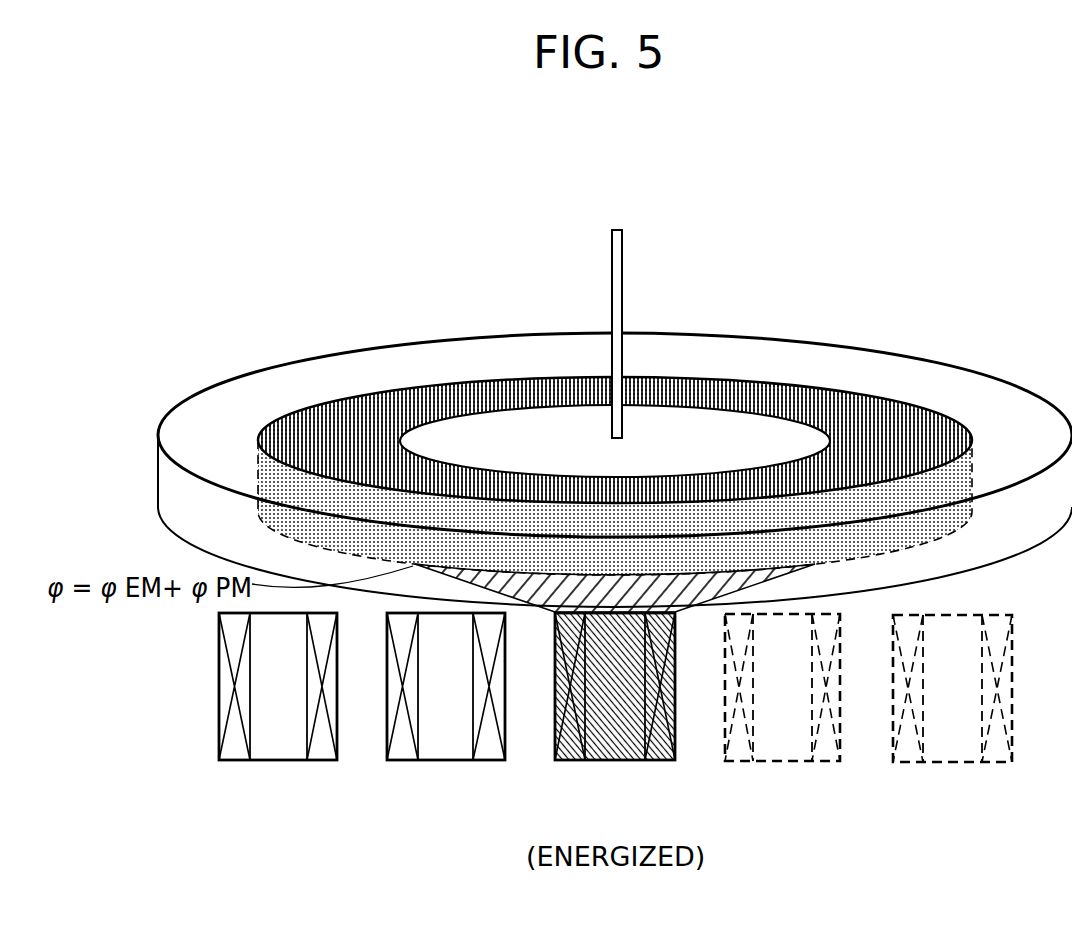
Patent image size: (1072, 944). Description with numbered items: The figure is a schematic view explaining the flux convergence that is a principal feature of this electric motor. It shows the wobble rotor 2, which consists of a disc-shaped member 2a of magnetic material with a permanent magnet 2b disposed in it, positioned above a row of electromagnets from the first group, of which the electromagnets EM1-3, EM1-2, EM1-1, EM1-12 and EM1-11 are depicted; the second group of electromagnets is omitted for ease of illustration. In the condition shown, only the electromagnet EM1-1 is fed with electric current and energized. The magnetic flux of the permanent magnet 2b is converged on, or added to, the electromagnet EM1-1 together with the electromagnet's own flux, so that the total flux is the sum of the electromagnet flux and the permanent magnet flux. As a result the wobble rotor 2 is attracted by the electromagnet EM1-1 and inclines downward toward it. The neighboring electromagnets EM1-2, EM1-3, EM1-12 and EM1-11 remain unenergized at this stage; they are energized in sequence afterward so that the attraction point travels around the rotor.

The wobble rotor 2 is at (615, 374).
The disc-shaped member of magnetic material 2a is at (822, 352).
The permanent magnet 2b is at (873, 417).
The electromagnet EM1-1 is at (615, 717).
The electromagnet EM1-2 is at (446, 717).
The electromagnet EM1-3 is at (278, 717).
The electromagnet EM1-11 is at (952, 718).
The electromagnet EM1-12 is at (782, 718).